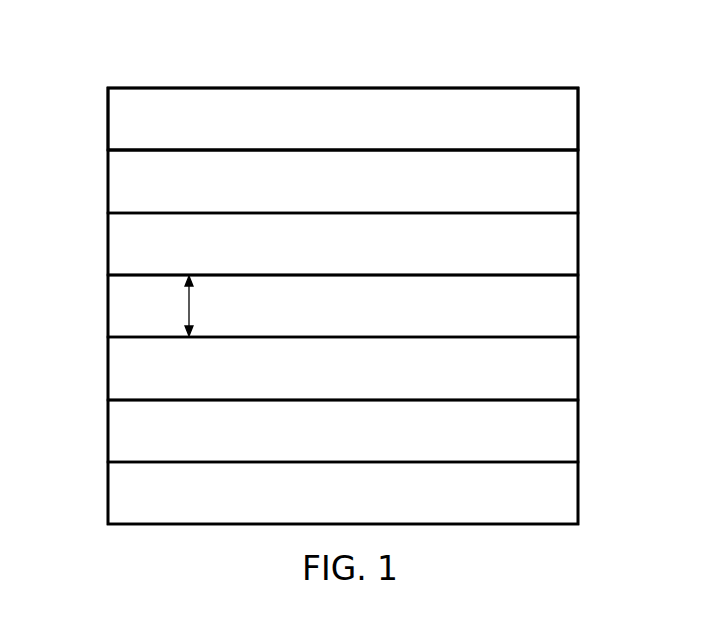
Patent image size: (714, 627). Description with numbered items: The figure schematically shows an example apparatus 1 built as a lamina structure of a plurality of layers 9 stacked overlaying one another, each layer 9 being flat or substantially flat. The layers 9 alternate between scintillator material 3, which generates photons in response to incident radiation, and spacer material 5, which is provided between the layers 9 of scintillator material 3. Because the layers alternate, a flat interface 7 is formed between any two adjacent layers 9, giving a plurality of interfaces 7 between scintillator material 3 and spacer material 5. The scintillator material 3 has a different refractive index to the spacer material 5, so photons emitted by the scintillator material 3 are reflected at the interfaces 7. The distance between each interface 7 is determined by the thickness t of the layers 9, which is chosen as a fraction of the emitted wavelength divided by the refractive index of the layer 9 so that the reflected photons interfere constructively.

The apparatus 1 is at (560, 68).
The scintillator material 3 is at (574, 118).
The spacer material 5 is at (574, 181).
The interface 7 is at (133, 150).
The layer 9 is at (118, 120).
The thickness t is at (195, 306).